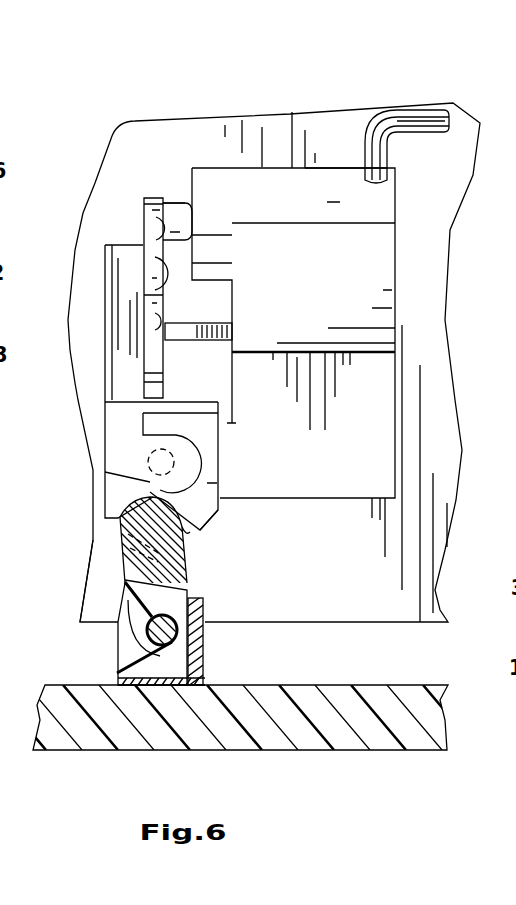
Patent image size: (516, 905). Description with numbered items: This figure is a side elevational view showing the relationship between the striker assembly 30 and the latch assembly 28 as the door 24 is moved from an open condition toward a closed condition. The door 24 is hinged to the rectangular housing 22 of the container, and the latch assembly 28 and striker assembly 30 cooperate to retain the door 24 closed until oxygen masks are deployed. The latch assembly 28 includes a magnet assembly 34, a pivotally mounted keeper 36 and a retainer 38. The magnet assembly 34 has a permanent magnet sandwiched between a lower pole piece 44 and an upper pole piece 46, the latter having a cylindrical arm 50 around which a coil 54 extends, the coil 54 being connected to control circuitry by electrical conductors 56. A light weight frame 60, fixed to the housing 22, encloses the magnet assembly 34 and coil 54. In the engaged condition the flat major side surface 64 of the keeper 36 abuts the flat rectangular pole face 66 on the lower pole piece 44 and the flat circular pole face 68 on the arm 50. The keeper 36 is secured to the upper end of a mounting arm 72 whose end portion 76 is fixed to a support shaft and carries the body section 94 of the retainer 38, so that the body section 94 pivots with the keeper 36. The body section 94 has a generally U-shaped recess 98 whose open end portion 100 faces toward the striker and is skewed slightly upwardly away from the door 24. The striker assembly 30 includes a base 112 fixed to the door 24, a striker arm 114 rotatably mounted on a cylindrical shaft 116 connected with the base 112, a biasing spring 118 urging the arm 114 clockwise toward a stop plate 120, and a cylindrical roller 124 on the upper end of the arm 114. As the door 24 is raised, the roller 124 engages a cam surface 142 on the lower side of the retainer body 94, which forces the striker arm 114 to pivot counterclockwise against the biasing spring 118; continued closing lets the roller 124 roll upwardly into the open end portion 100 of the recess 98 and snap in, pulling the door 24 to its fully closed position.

The housing 22 is at (157, 130).
The door 24 is at (300, 723).
The latch assembly 28 is at (338, 114).
The striker assembly 30 is at (80, 558).
The magnet assembly 34 is at (408, 282).
The keeper 36 is at (133, 214).
The retainer 38 is at (231, 468).
The lower pole piece 44 is at (185, 333).
The upper pole piece 46 is at (169, 188).
The cylindrical arm 50 is at (184, 206).
The coil 54 is at (282, 158).
The electrical conductors 56 is at (423, 124).
The frame 60 is at (380, 377).
The major side surface 64 is at (145, 290).
The pole face 66 is at (160, 315).
The pole face 68 is at (228, 202).
The mounting arm 72 is at (96, 320).
The end portion 76 is at (115, 413).
The body section 94 is at (212, 483).
The U-shaped recess 98 is at (205, 451).
The open end portion 100 is at (117, 472).
The base 112 is at (118, 638).
The striker arm 114 is at (123, 568).
The cylindrical shaft 116 is at (202, 655).
The biasing spring 118 is at (117, 660).
The stop plate 120 is at (205, 608).
The roller 124 is at (113, 532).
The cam surface 142 is at (188, 530).